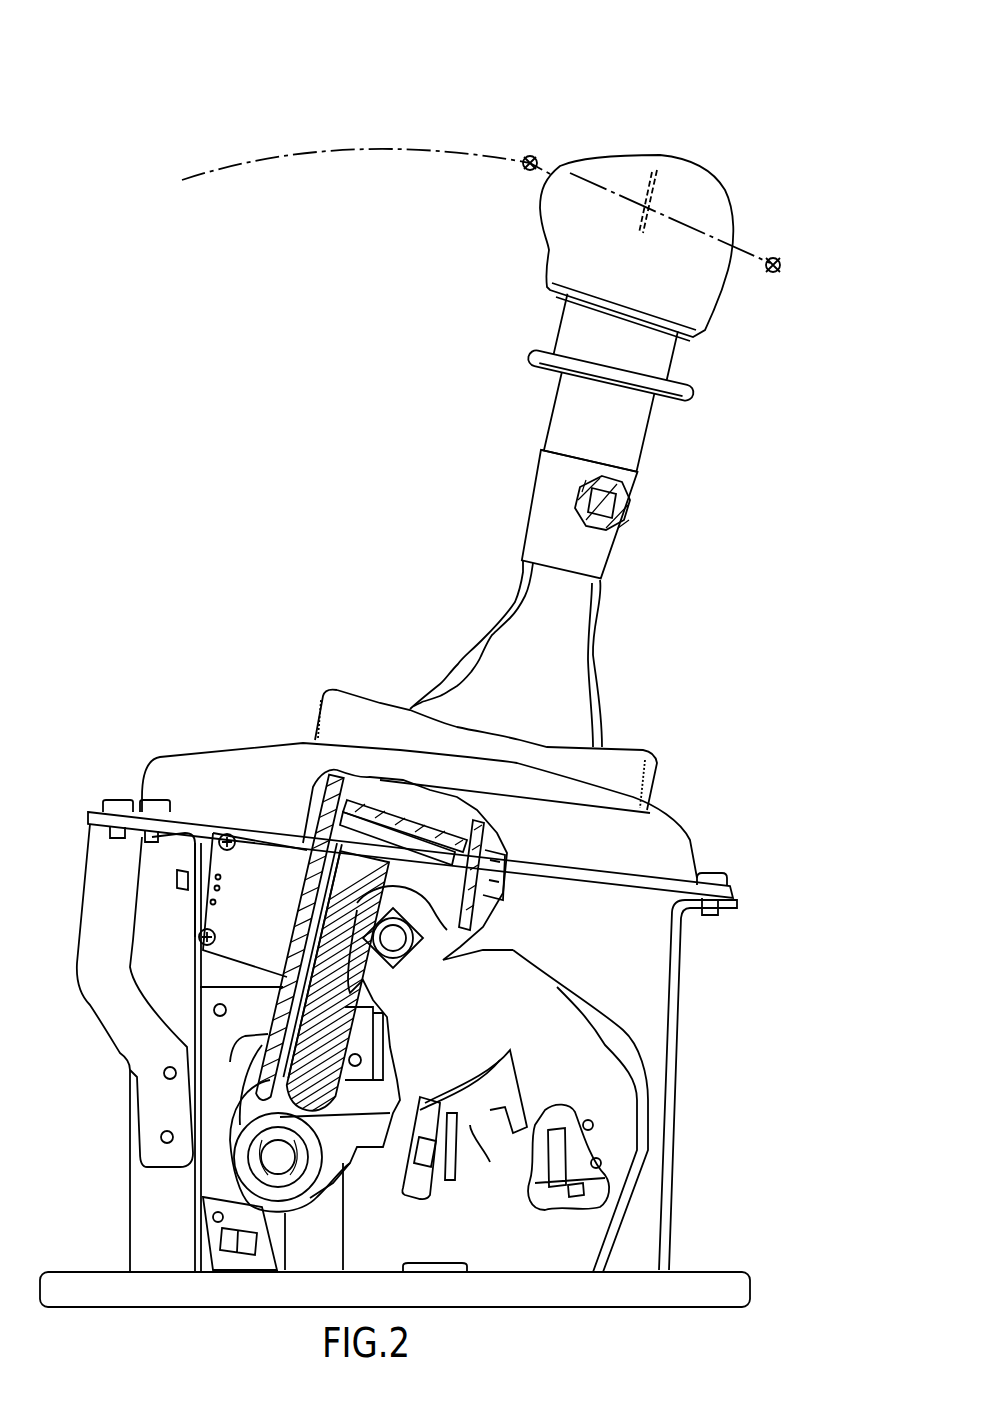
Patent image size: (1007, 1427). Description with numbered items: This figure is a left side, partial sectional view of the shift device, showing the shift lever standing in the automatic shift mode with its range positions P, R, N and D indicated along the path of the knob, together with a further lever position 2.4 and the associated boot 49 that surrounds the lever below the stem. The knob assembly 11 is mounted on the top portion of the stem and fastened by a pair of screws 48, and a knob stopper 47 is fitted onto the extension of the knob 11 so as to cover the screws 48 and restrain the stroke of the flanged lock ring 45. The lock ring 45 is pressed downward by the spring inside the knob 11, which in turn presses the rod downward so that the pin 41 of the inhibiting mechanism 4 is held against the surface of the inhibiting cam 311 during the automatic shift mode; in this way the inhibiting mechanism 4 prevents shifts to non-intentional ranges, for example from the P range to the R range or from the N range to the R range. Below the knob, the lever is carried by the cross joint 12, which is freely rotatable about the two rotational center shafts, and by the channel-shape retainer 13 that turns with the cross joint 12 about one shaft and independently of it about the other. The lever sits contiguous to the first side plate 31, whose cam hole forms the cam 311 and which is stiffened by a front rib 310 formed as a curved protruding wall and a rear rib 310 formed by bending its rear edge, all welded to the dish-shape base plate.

The P range P is at (300, 178).
The R range R is at (457, 182).
The N range N is at (552, 190).
The D range D is at (430, 1180).
The shift position 2.4 is at (762, 285).
The knob assembly 11 is at (713, 318).
The cross joint 12 is at (460, 800).
The retainer 13 is at (525, 180).
The lock ring 45 is at (693, 397).
The knob stopper 47 is at (523, 520).
The screws 48 is at (627, 500).
The boot 49 is at (607, 650).
The rib 310 is at (637, 1077).
The first side plate 31 is at (645, 1193).
The inhibiting cam 311 is at (475, 1130).
The inhibiting mechanism 4 is at (445, 1190).
The pin 41 is at (412, 1200).